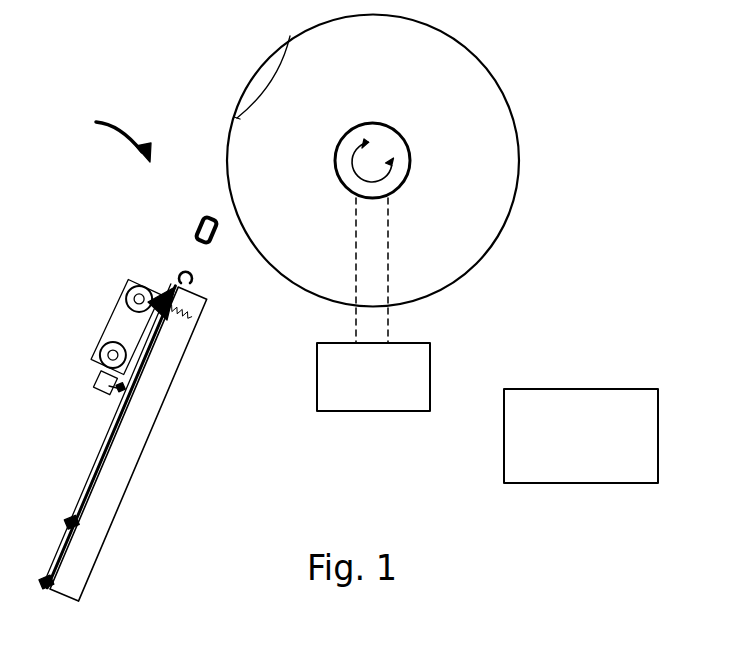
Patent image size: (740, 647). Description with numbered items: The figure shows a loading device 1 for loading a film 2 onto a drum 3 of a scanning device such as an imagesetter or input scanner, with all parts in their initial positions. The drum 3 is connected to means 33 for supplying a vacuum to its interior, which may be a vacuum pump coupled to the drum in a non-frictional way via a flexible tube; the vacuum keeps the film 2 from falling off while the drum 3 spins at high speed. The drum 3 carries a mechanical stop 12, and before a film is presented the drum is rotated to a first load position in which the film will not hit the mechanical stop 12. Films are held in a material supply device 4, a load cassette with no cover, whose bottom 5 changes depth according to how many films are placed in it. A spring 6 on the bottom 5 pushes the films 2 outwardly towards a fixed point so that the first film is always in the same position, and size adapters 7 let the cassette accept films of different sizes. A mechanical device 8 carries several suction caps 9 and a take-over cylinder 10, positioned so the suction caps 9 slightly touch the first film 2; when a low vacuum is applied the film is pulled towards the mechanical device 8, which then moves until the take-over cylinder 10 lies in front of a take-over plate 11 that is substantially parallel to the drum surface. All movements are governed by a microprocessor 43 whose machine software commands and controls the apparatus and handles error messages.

The loading device 1 is at (114, 136).
The film 2 is at (97, 462).
The drum 3 is at (490, 113).
The material supply device 4 is at (125, 458).
The bottom 5 is at (128, 410).
The spring 6 is at (199, 318).
The size adapters 7 is at (66, 524).
The mechanical device 8 is at (117, 326).
The suction caps 9 is at (164, 294).
The take-over cylinder 10 is at (96, 382).
The take-over plate 11 is at (218, 236).
The mechanical stop 12 is at (290, 36).
The means for supplying a vacuum 33 is at (388, 327).
The microprocessor 43 is at (605, 388).